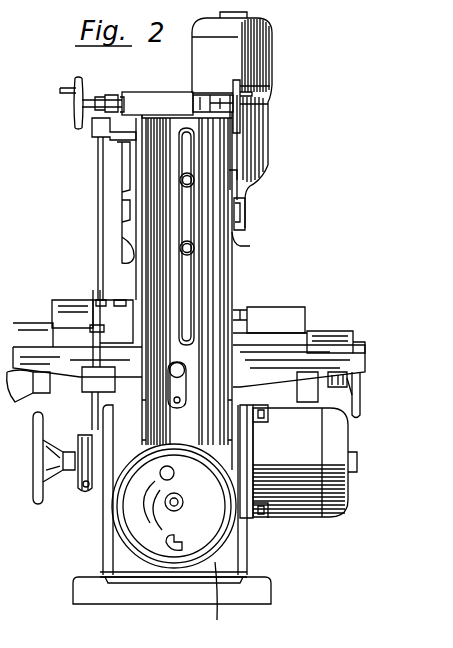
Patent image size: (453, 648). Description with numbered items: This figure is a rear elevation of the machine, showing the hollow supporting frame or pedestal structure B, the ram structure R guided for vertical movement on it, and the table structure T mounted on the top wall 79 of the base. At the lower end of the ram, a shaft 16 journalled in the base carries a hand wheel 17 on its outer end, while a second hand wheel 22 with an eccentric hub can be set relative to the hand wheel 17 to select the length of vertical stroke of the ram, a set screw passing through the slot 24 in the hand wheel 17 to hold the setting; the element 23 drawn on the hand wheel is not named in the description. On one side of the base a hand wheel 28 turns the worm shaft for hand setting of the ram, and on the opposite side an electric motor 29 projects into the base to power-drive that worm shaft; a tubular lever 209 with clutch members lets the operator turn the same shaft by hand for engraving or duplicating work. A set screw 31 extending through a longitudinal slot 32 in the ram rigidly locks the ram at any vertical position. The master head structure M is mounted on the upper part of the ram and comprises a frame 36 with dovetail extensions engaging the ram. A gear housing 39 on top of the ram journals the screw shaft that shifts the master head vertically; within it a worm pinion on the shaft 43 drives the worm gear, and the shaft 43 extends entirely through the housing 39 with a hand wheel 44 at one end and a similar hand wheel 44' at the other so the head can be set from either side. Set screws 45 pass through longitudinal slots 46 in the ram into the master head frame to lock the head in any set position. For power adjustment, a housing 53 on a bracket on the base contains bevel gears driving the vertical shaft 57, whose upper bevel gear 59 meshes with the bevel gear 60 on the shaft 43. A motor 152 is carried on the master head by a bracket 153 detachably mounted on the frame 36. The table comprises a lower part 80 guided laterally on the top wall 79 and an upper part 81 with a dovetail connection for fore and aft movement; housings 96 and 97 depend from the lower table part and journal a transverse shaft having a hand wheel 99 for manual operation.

The shaft 16 is at (183, 501).
The hand wheel 17 is at (215, 599).
The hand wheel 22 is at (180, 562).
The crank pin 23 is at (174, 476).
The slot 24 is at (174, 538).
The hand wheel 28 is at (33, 460).
The electric motor 29 is at (303, 518).
The set screw 31 is at (175, 366).
The longitudinal slot 32 is at (167, 397).
The frame 36 is at (127, 178).
The gear housing 39 is at (137, 94).
The shaft 43 is at (100, 96).
The hand wheel 44 is at (79, 103).
The hand wheel 44' is at (258, 94).
The set screws 45 is at (192, 181).
The longitudinal slots 46 is at (179, 303).
The housing 53 is at (98, 392).
The vertical shaft 57 is at (97, 244).
The bevel gear 59 is at (96, 112).
The bevel gear 60 is at (122, 94).
The top wall 79 is at (277, 350).
The lower table part 80 is at (332, 333).
The upper table part 81 is at (268, 307).
The housing 96 is at (300, 395).
The housing 97 is at (70, 406).
The hand wheel 99 is at (352, 404).
The motor 152 is at (274, 88).
The bracket 153 is at (250, 135).
The lever 209 is at (82, 490).
The supporting frame or pedestal structure B is at (266, 598).
The master head structure M is at (249, 210).
The ram structure R is at (218, 298).
The table structure T is at (300, 306).